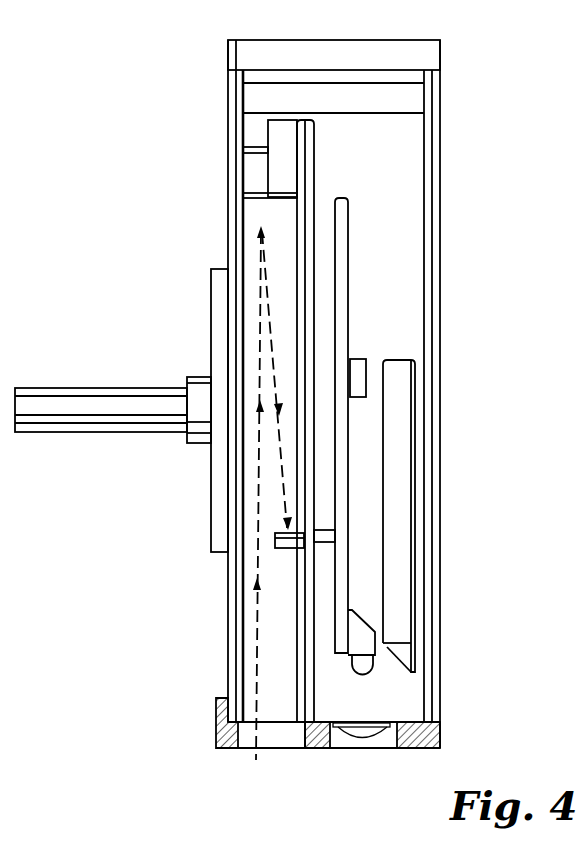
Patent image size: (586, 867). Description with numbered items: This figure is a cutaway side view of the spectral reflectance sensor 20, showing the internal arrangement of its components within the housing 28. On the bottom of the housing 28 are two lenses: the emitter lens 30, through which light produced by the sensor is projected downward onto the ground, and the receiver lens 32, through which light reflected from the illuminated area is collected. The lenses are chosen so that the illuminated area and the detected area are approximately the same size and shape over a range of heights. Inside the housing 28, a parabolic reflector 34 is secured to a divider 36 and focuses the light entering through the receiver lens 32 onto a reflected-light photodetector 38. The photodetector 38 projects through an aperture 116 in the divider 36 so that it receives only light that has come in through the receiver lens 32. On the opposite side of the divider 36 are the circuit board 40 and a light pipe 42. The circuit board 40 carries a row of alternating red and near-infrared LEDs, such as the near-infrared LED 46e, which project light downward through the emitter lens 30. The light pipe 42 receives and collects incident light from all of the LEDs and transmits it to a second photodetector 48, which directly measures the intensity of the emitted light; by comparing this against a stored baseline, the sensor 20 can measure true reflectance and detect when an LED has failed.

The reflectance sensor 20 is at (453, 139).
The housing 28 is at (427, 51).
The emitter lens 30 is at (385, 742).
The receiver lens 32 is at (268, 735).
The parabolic reflector 34 is at (282, 178).
The divider 36 is at (300, 147).
The photodetector 38 is at (288, 549).
The circuit board 40 is at (343, 280).
The light pipe 42 is at (413, 437).
The near infrared LED 46e is at (372, 675).
The photodetector 48 is at (365, 357).
The aperture 116 is at (308, 527).